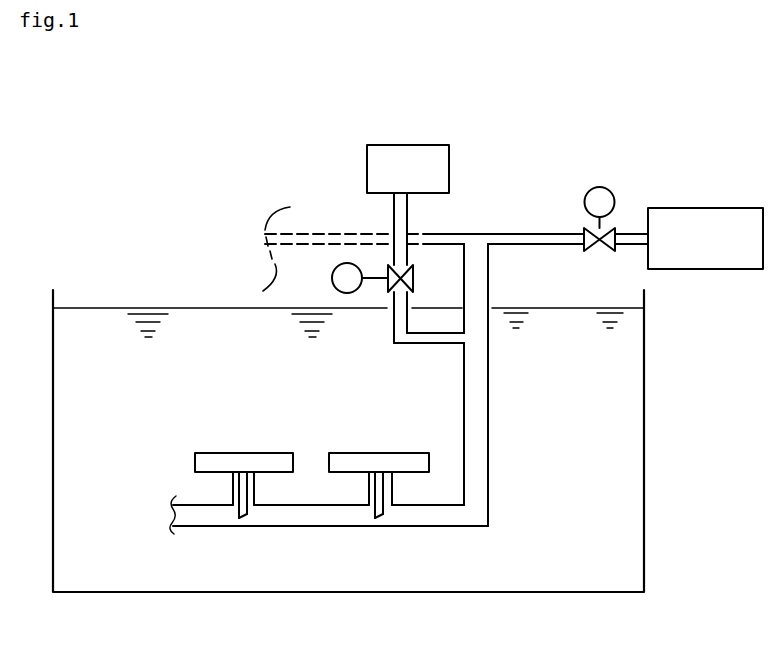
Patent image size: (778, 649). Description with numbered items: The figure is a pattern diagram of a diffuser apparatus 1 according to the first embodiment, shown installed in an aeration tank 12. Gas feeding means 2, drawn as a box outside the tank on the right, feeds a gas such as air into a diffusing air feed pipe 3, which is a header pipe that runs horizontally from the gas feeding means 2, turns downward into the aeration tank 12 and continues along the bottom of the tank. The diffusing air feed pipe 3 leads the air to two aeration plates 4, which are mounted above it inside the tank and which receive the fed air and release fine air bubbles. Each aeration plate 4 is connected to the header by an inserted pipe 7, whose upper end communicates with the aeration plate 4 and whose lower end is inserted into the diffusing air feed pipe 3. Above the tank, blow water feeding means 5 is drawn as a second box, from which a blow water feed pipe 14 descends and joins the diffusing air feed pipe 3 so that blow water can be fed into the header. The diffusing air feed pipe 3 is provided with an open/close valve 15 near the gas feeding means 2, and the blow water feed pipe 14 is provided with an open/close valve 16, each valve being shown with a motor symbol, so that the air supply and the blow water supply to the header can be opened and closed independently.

The diffuser apparatus 1 is at (216, 181).
The gas feeding means 2 is at (742, 208).
The diffusing air feed pipe 3 is at (490, 406).
The aeration plate 4 is at (277, 453).
The blow water feeding means 5 is at (431, 145).
The inserted pipe 7 is at (238, 527).
The aeration tank 12 is at (646, 385).
The blow water feed pipe 14 is at (409, 216).
The open/close valve 15 is at (583, 202).
The open/close valve 16 is at (333, 277).